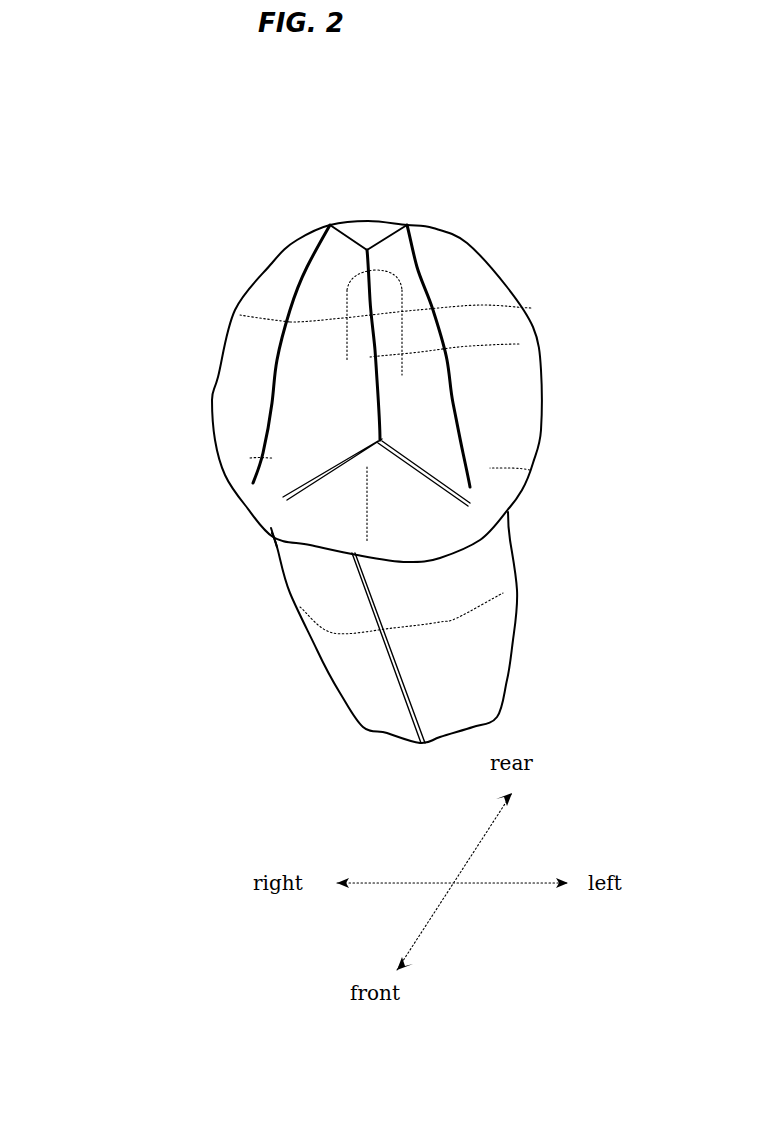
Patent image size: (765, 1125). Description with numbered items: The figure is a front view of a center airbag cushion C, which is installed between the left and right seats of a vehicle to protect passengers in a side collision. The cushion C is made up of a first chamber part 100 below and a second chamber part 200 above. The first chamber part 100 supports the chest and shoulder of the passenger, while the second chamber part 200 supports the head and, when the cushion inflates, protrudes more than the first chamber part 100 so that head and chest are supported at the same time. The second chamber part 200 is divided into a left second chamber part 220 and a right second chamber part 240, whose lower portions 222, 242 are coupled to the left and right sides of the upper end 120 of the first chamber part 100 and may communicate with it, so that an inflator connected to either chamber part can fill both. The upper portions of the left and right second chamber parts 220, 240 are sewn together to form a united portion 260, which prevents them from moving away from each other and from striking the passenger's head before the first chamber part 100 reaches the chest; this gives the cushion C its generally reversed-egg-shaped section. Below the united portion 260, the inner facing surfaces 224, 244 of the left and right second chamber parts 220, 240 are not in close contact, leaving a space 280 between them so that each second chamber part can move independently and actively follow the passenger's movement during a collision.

The first chamber part 100 is at (490, 660).
The upper end of the first chamber part 120 is at (283, 543).
The second chamber part 200 is at (398, 127).
The left second chamber part 220 is at (404, 223).
The lower portion of the left second chamber part 222 is at (530, 470).
The inner facing surface of the left second chamber part 224 is at (520, 344).
The right second chamber part 240 is at (330, 224).
The lower portion of the right second chamber part 242 is at (250, 458).
The inner facing surface of the right second chamber part 244 is at (240, 315).
The united portion 260 is at (380, 252).
The space 280 is at (533, 308).
The center airbag cushion C is at (184, 563).